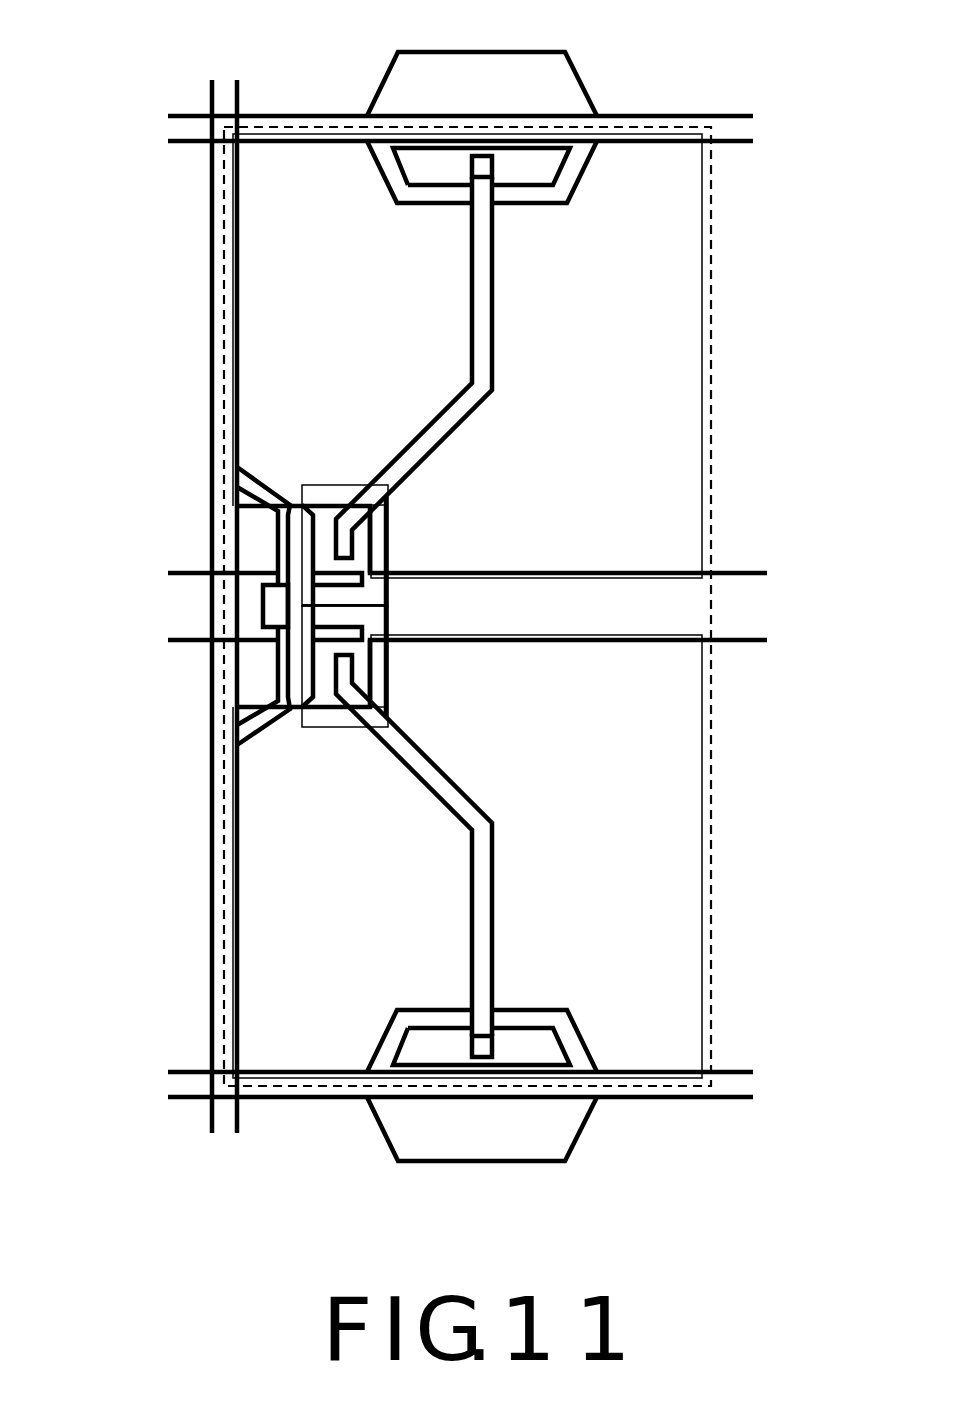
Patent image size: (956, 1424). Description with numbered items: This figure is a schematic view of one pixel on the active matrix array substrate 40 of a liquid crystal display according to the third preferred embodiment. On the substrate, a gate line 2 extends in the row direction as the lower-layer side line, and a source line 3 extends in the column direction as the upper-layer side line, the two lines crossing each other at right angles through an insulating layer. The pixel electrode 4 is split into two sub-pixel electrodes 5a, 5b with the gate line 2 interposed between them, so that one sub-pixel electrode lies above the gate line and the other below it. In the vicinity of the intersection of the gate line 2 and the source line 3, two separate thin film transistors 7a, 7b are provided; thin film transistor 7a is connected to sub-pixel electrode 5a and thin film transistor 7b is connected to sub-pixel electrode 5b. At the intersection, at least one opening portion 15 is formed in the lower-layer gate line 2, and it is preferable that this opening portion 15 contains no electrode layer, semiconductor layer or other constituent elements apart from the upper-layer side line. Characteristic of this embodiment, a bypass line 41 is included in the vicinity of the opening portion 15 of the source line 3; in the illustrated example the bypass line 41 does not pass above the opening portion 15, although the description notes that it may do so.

The active matrix array substrate 40 is at (118, 53).
The source line 3 is at (204, 219).
The pixel electrode 4 is at (710, 292).
The sub-pixel electrode 5a is at (690, 376).
The sub-pixel electrode 5b is at (690, 838).
The gate line 2 is at (756, 572).
The thin film transistor 7a is at (388, 512).
The thin film transistor 7b is at (388, 684).
The bypass line 41 is at (183, 490).
The opening portion 15 is at (263, 603).